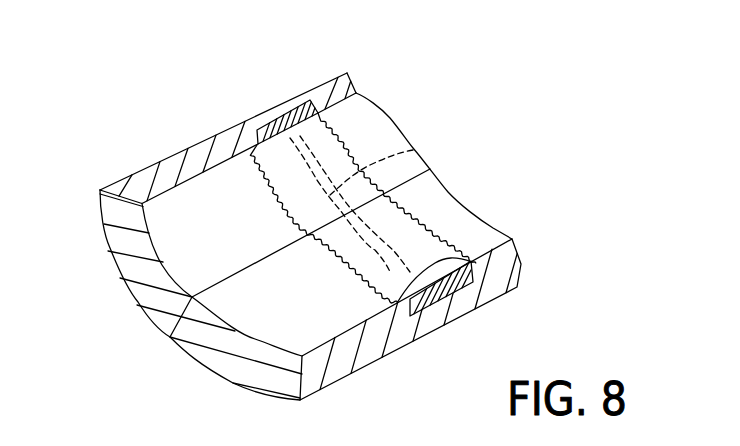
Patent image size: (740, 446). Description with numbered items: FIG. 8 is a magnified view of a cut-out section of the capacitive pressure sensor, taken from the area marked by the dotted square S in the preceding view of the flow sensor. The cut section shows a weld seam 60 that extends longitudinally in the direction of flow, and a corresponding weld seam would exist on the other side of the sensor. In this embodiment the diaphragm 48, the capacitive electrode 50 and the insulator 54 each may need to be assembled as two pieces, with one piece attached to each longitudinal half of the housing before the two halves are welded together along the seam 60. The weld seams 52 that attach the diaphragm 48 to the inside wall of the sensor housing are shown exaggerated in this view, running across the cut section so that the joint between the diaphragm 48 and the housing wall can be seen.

The dotted square S is at (460, 107).
The diaphragm 48 is at (386, 119).
The capacitive electrode 50 is at (414, 150).
The weld seams 52 is at (431, 266).
The insulator 54 is at (414, 310).
The weld seam 60 is at (194, 294).